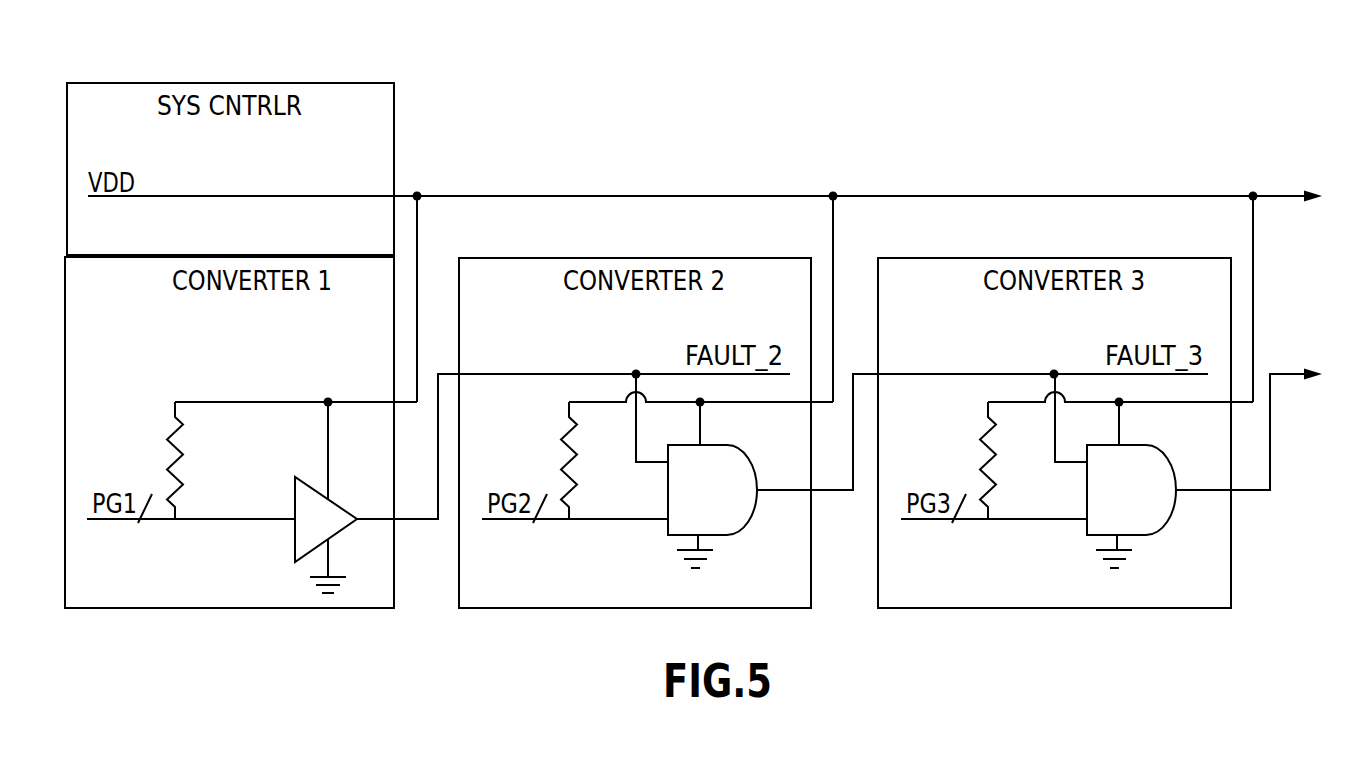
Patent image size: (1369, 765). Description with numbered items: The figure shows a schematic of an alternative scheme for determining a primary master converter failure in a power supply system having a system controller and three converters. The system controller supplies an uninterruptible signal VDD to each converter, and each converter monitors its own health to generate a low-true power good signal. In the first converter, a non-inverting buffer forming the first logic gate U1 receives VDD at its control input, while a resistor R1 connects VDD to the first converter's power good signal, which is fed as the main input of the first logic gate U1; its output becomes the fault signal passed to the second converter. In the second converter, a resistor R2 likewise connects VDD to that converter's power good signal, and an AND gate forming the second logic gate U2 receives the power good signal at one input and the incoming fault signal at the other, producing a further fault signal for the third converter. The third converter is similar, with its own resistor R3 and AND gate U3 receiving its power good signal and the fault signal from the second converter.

The resistor R1 is at (189, 460).
The first logic gate U1 is at (326, 519).
The resistor R2 is at (584, 460).
The second logic gate U2 is at (712, 490).
The resistor R3 is at (1003, 460).
The third logic gate U3 is at (1131, 490).